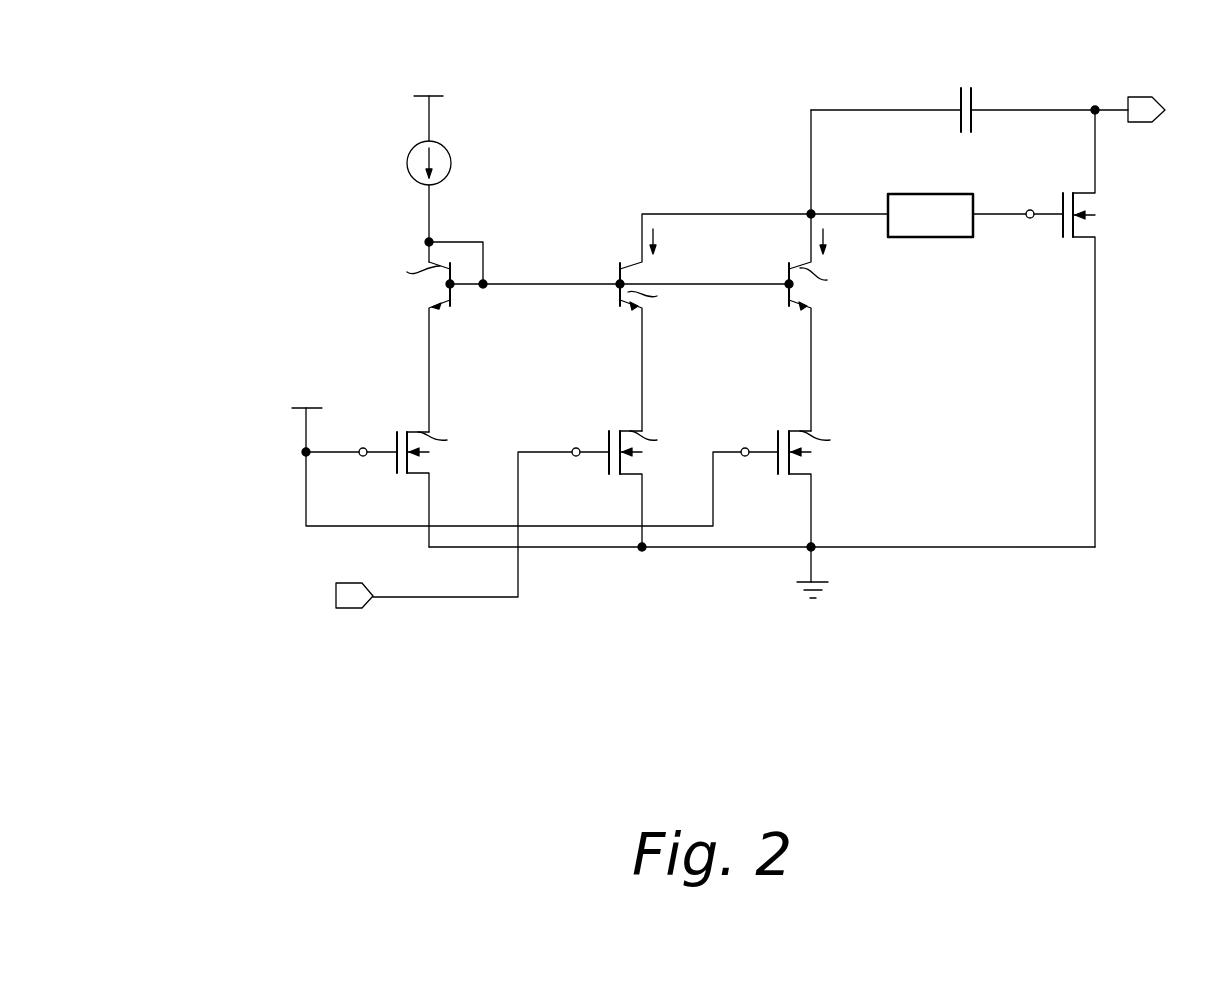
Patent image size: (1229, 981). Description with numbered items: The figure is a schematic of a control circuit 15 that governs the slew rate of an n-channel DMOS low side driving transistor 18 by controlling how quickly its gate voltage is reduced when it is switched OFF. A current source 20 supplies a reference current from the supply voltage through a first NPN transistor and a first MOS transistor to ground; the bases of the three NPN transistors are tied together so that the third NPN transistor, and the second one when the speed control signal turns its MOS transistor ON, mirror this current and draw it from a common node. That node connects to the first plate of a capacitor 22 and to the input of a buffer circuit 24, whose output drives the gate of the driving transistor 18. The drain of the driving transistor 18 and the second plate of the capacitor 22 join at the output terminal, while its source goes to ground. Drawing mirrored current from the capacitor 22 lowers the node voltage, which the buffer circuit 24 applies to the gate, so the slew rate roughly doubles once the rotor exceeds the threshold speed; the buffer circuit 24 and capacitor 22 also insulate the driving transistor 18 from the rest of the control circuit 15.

The control circuit 15 is at (262, 88).
The current source 20 is at (407, 163).
The capacitor 22 is at (981, 94).
The buffer circuit 24 is at (931, 237).
The driving transistor 18 is at (1097, 196).